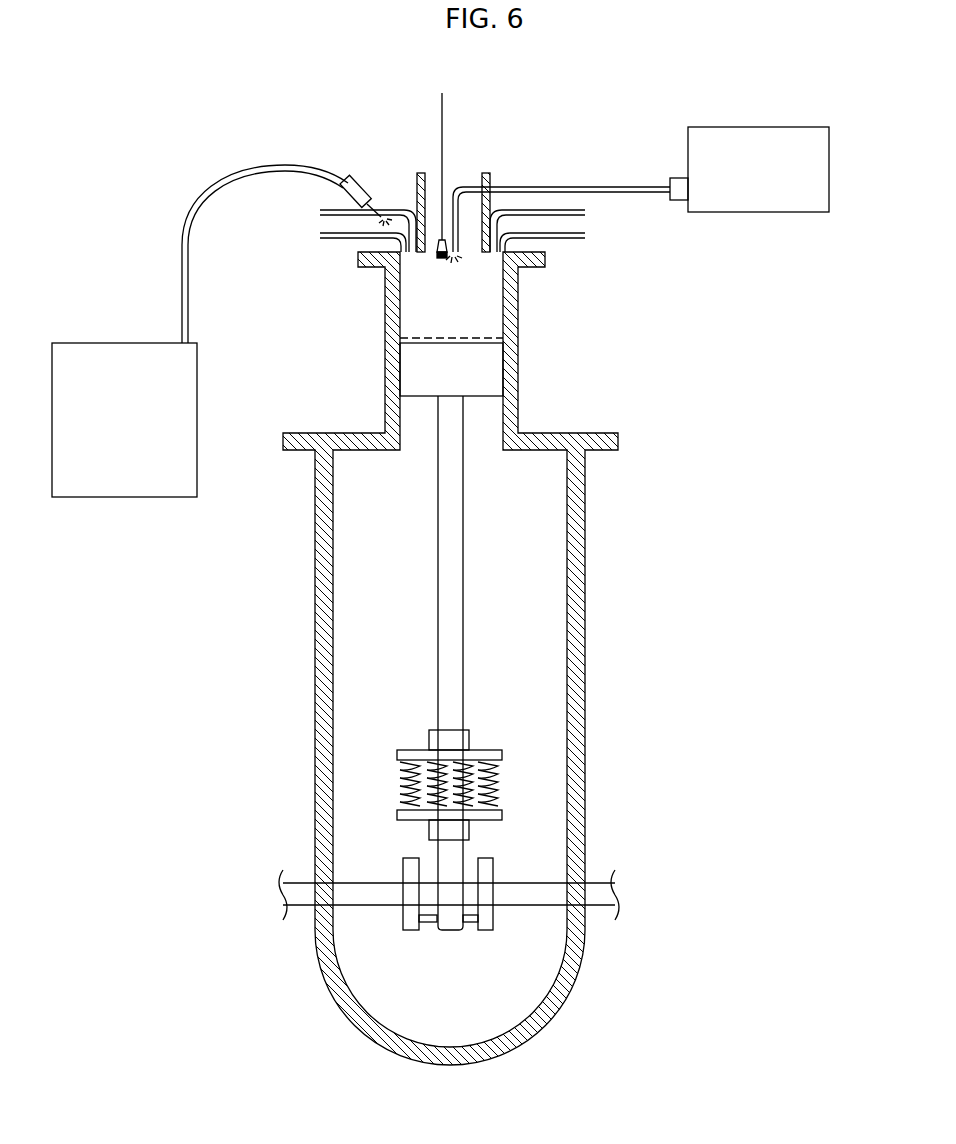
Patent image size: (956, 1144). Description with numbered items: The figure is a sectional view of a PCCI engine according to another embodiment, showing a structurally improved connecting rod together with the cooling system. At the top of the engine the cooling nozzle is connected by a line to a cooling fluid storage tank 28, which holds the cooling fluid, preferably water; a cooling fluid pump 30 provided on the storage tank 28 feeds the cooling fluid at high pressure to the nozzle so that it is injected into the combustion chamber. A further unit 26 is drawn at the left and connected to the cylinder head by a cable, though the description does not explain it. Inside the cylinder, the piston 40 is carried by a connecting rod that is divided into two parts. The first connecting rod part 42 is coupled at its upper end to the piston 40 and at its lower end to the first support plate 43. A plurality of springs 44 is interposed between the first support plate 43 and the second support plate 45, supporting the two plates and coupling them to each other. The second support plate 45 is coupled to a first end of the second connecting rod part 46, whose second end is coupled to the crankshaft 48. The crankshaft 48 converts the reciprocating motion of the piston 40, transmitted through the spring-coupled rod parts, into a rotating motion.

The controller 26 is at (128, 480).
The cooling fluid storage tank 28 is at (757, 205).
The cooling fluid pump 30 is at (677, 202).
The piston 40 is at (493, 368).
The first connecting rod part 42 is at (455, 492).
The first support plate 43 is at (495, 753).
The springs 44 is at (500, 780).
The second support plate 45 is at (502, 815).
The second connecting rod part 46 is at (452, 860).
The crankshaft 48 is at (528, 900).